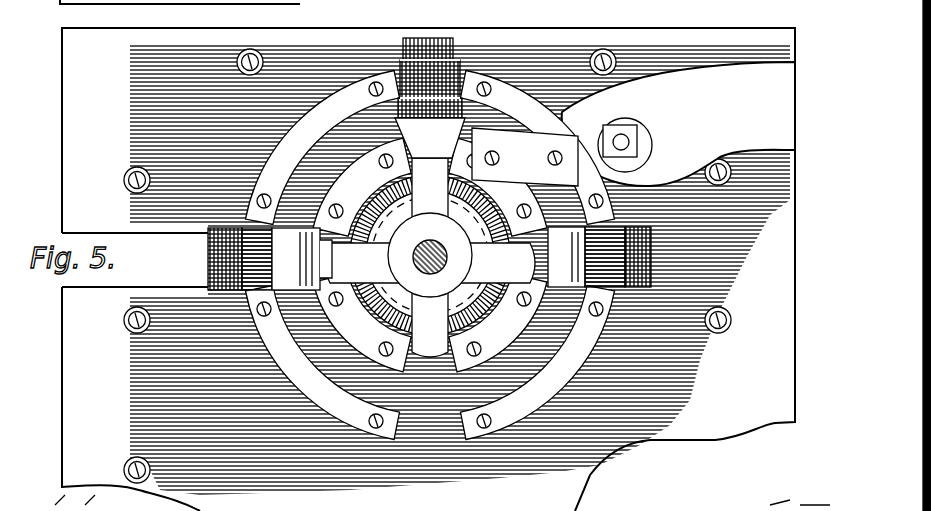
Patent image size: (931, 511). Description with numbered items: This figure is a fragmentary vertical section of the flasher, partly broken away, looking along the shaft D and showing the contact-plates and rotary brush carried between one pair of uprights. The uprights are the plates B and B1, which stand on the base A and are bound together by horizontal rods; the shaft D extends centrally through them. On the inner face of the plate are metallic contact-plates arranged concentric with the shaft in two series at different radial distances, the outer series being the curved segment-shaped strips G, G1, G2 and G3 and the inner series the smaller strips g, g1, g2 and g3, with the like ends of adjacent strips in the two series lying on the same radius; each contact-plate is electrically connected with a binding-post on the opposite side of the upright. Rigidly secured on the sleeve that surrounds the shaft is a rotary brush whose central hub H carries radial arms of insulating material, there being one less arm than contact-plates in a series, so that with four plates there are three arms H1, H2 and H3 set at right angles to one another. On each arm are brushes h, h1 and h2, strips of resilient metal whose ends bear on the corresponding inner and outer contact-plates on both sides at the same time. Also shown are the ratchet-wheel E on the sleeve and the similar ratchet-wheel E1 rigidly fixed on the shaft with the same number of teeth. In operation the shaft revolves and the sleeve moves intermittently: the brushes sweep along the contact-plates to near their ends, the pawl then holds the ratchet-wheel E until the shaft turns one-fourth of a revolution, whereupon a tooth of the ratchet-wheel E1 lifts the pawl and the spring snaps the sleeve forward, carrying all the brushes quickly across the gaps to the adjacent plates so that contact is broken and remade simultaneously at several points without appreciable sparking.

The base A is at (610, 112).
The plate B is at (428, 269).
The plate B1 is at (650, 412).
The shaft D is at (424, 262).
The ratchet-wheel E is at (430, 255).
The ratchet-wheel E1 is at (440, 269).
The outer contact-plate G is at (323, 148).
The outer contact-plate G1 is at (538, 148).
The outer contact-plate G2 is at (538, 363).
The outer contact-plate G3 is at (323, 363).
The inner contact-plate g is at (362, 187).
The inner contact-plate g1 is at (498, 187).
The inner contact-plate g2 is at (498, 328).
The inner contact-plate g3 is at (362, 323).
The central hub H is at (240, 259).
The radial arm H1 is at (296, 259).
The radial arm H2 is at (432, 58).
The radial arm H3 is at (651, 264).
The brush h is at (322, 259).
The brush h1 is at (525, 157).
The brush h2 is at (566, 257).